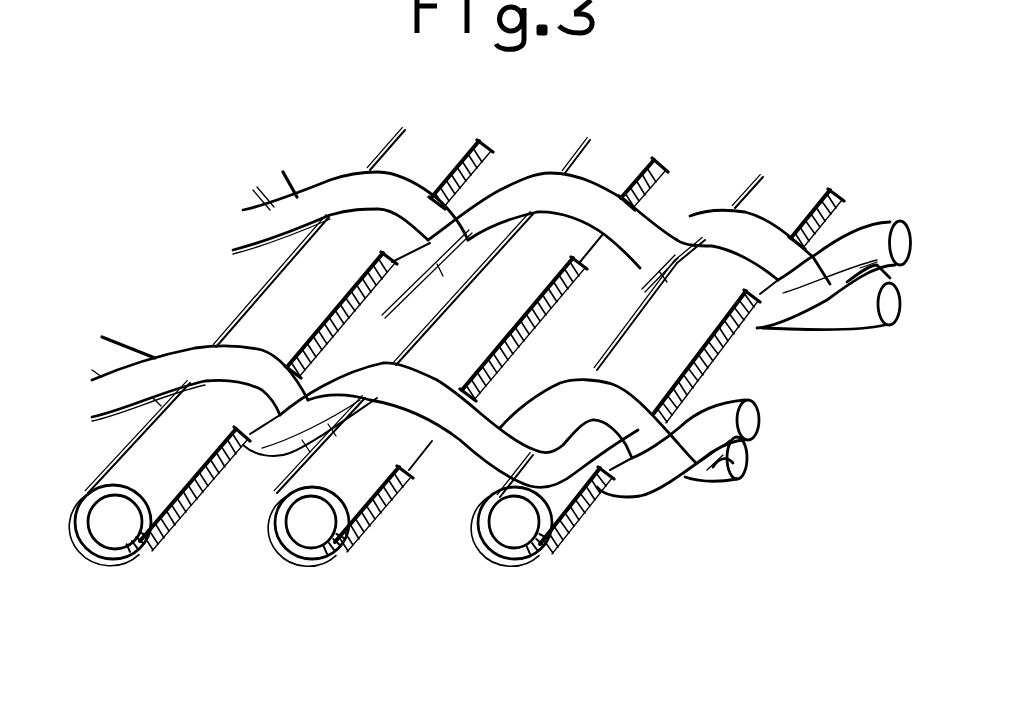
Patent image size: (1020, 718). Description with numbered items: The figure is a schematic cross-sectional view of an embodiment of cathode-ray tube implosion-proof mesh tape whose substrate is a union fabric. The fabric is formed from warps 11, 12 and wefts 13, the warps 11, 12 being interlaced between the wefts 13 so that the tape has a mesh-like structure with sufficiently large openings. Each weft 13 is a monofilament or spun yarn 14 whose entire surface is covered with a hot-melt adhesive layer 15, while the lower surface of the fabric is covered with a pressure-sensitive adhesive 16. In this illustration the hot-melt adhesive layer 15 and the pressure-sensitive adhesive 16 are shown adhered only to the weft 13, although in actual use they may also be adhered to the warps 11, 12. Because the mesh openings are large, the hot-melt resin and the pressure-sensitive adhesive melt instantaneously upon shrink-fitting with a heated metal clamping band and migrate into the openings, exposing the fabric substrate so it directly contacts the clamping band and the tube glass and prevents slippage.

The warp 11 is at (855, 300).
The warp 12 is at (873, 233).
The weft 13 is at (475, 318).
The monofilament or spun yarn 14 is at (117, 527).
The hot-melt adhesive layer 15 is at (145, 547).
The pressure-sensitive adhesive 16 is at (91, 547).